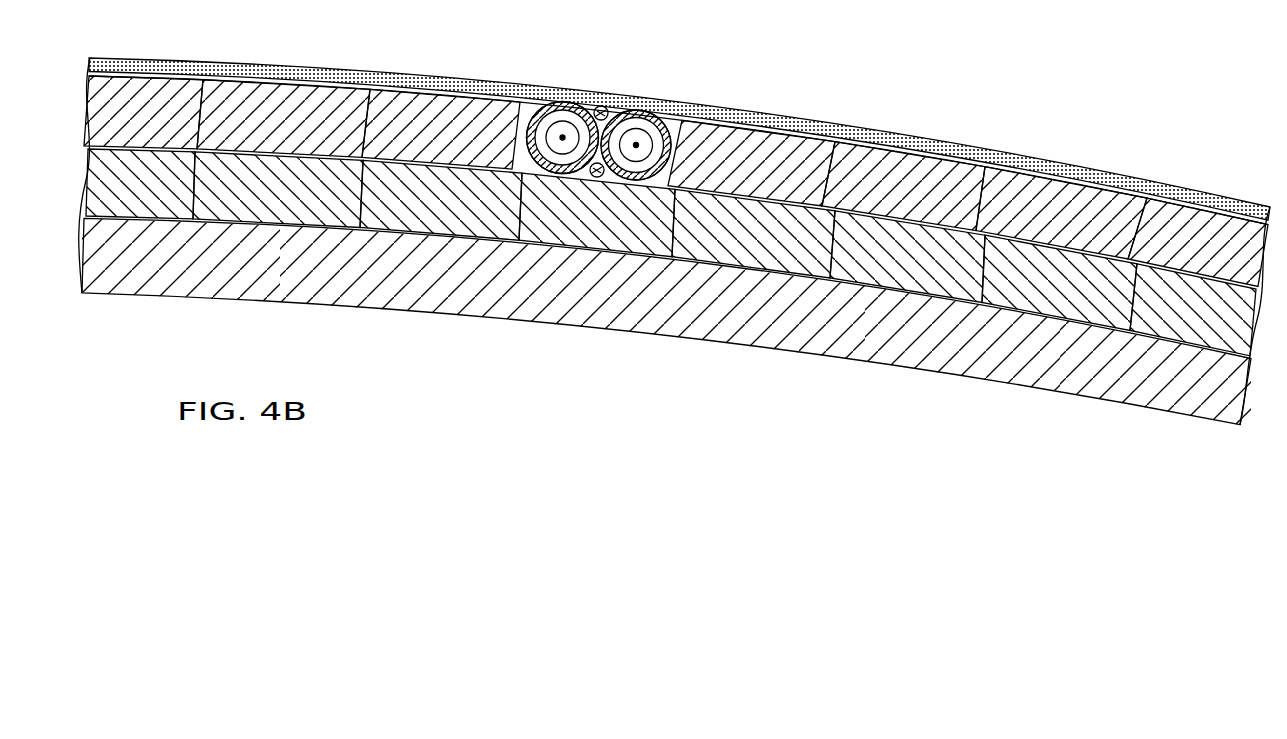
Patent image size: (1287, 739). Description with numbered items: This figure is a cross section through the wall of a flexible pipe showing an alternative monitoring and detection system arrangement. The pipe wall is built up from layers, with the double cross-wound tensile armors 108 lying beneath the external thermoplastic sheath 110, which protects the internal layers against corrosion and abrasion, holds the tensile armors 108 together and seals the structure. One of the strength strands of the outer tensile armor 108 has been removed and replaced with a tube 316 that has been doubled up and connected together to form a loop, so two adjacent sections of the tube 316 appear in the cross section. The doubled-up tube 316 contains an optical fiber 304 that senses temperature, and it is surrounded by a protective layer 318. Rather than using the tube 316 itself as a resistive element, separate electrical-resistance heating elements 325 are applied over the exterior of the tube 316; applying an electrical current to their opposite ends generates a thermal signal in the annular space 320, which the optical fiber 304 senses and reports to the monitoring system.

The double cross-wound tensile armors 108 is at (1063, 190).
The external thermoplastic sheath 110 is at (911, 140).
The optical fiber 304 is at (563, 136).
The tube 316 is at (660, 106).
The protective layer 318 is at (673, 140).
The annular space 320 is at (530, 108).
The electrical-resistance heating elements 325 is at (603, 108).